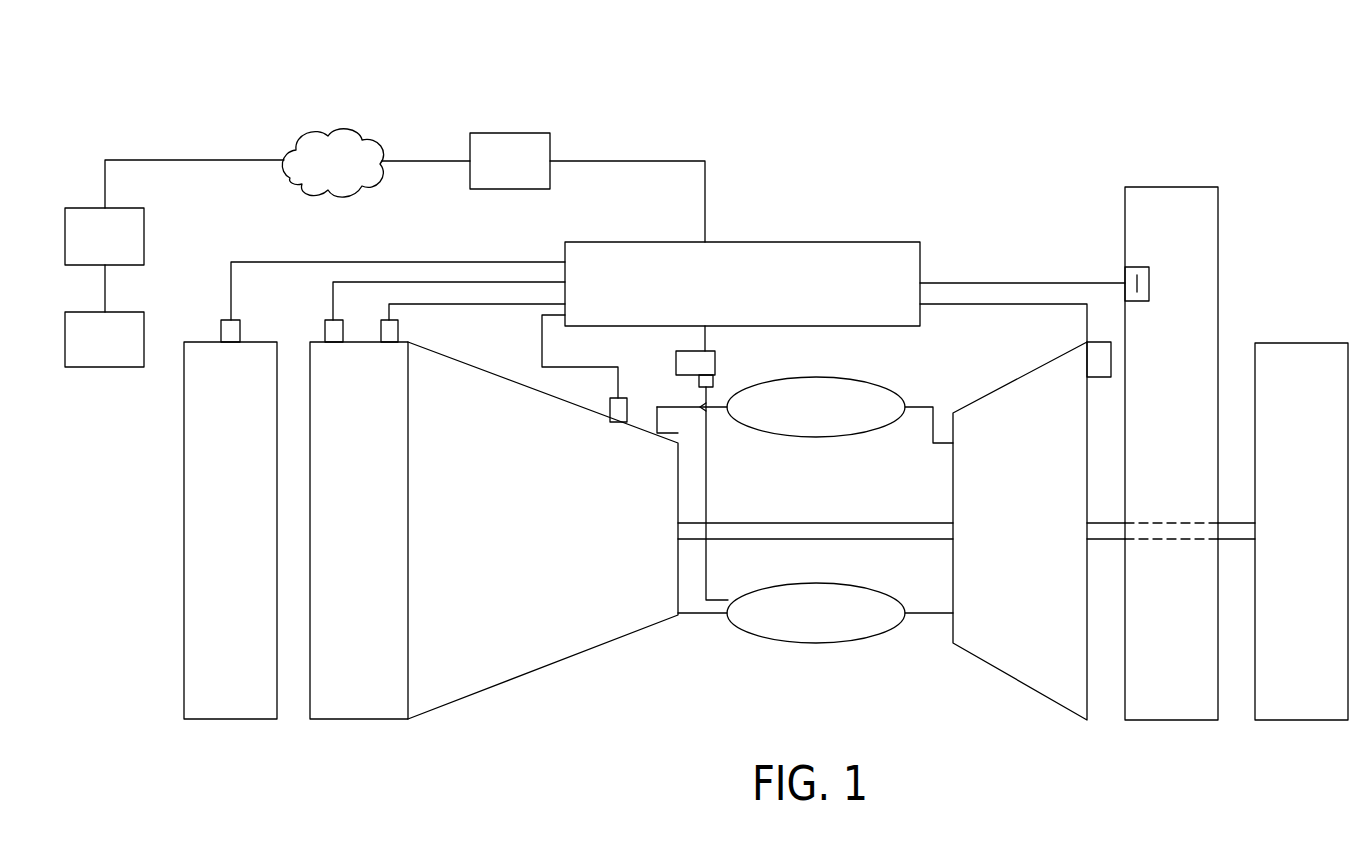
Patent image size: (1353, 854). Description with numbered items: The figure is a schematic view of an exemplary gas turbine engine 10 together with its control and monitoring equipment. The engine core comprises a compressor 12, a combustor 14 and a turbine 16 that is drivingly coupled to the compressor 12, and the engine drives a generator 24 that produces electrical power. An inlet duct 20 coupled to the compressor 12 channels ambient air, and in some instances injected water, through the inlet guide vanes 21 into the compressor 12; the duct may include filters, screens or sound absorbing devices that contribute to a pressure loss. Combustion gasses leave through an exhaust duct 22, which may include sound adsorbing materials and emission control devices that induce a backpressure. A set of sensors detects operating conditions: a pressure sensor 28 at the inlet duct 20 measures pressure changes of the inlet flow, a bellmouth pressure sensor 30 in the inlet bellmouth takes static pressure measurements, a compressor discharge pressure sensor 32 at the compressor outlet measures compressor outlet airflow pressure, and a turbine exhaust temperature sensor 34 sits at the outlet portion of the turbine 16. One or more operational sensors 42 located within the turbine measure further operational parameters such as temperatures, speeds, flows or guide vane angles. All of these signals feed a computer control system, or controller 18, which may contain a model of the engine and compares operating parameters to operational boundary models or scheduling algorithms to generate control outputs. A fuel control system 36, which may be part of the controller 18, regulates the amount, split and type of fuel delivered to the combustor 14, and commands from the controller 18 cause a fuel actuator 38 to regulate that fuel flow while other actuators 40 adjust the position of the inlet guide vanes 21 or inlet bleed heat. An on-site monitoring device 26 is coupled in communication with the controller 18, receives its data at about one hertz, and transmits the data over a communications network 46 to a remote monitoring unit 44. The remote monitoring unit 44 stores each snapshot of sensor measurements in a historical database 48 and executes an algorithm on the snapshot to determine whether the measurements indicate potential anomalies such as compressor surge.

The gas turbine engine 10 is at (191, 95).
The compressor 12 is at (528, 677).
The combustor 14 is at (840, 377).
The turbine 16 is at (993, 392).
The controller 18 is at (620, 242).
The inlet duct 20 is at (230, 719).
The inlet guide vanes 21 is at (350, 719).
The exhaust duct 22 is at (1170, 720).
The generator 24 is at (1300, 720).
The on-site monitoring device 26 is at (526, 174).
The pressure sensor 28 is at (226, 320).
The bellmouth pressure sensor 30 is at (330, 320).
The compressor discharge pressure sensor 32 is at (614, 398).
The turbine exhaust temperature sensor 34 is at (1100, 342).
The fuel control system 36 is at (676, 363).
The fuel actuator 38 is at (699, 382).
The actuators 40 is at (386, 320).
The operational sensors 42 is at (1137, 267).
The remote monitoring unit 44 is at (121, 250).
The communications network 46 is at (348, 176).
The historical database 48 is at (121, 353).